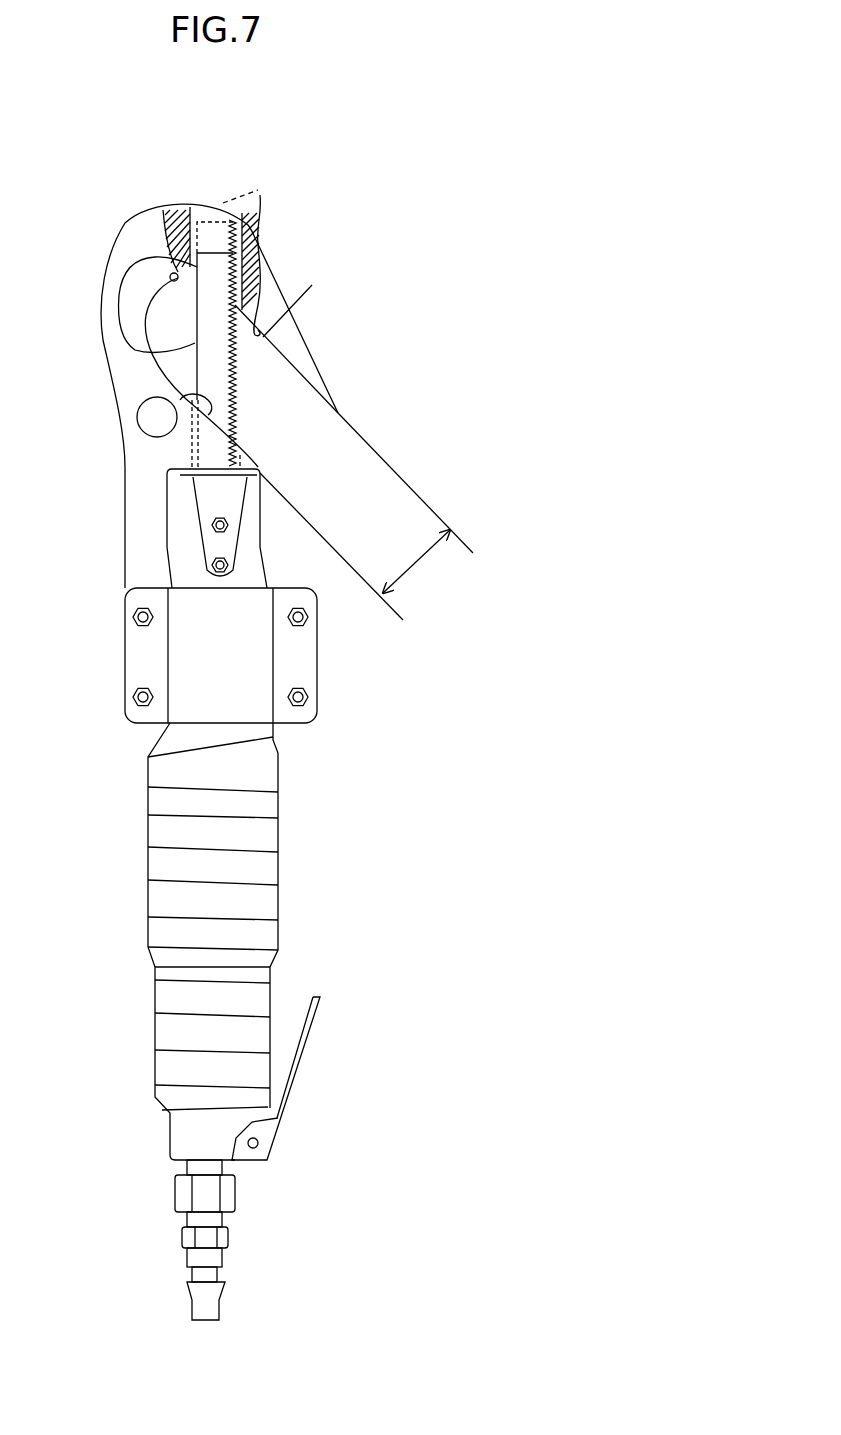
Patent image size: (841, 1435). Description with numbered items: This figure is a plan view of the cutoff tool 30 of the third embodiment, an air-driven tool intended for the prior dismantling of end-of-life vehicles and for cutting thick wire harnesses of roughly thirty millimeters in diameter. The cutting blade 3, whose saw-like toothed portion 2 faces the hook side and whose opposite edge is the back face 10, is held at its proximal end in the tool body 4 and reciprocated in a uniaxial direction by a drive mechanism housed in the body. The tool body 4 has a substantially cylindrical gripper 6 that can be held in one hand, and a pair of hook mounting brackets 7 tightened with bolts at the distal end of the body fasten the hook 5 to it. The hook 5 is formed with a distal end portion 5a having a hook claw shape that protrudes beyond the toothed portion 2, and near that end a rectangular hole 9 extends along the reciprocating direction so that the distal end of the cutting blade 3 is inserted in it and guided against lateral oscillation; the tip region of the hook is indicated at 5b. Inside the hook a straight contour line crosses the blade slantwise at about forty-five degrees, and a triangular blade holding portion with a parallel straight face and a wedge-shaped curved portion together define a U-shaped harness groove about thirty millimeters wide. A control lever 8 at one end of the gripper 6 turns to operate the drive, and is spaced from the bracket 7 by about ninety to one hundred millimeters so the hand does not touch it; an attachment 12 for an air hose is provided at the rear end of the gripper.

The toothed portion 2 is at (247, 340).
The cutting blade 3 is at (207, 315).
The tool body 4 is at (280, 835).
The hook 5 is at (124, 232).
The distal end portion 5a is at (318, 368).
The head tip 5b is at (345, 416).
The gripper 6 is at (280, 868).
The hook mounting bracket 7 is at (300, 665).
The control lever 8 is at (302, 1070).
The hole 9 is at (212, 232).
The back face 10 is at (135, 348).
The attachment 12 is at (205, 1190).
The cutoff tool 30 is at (372, 262).